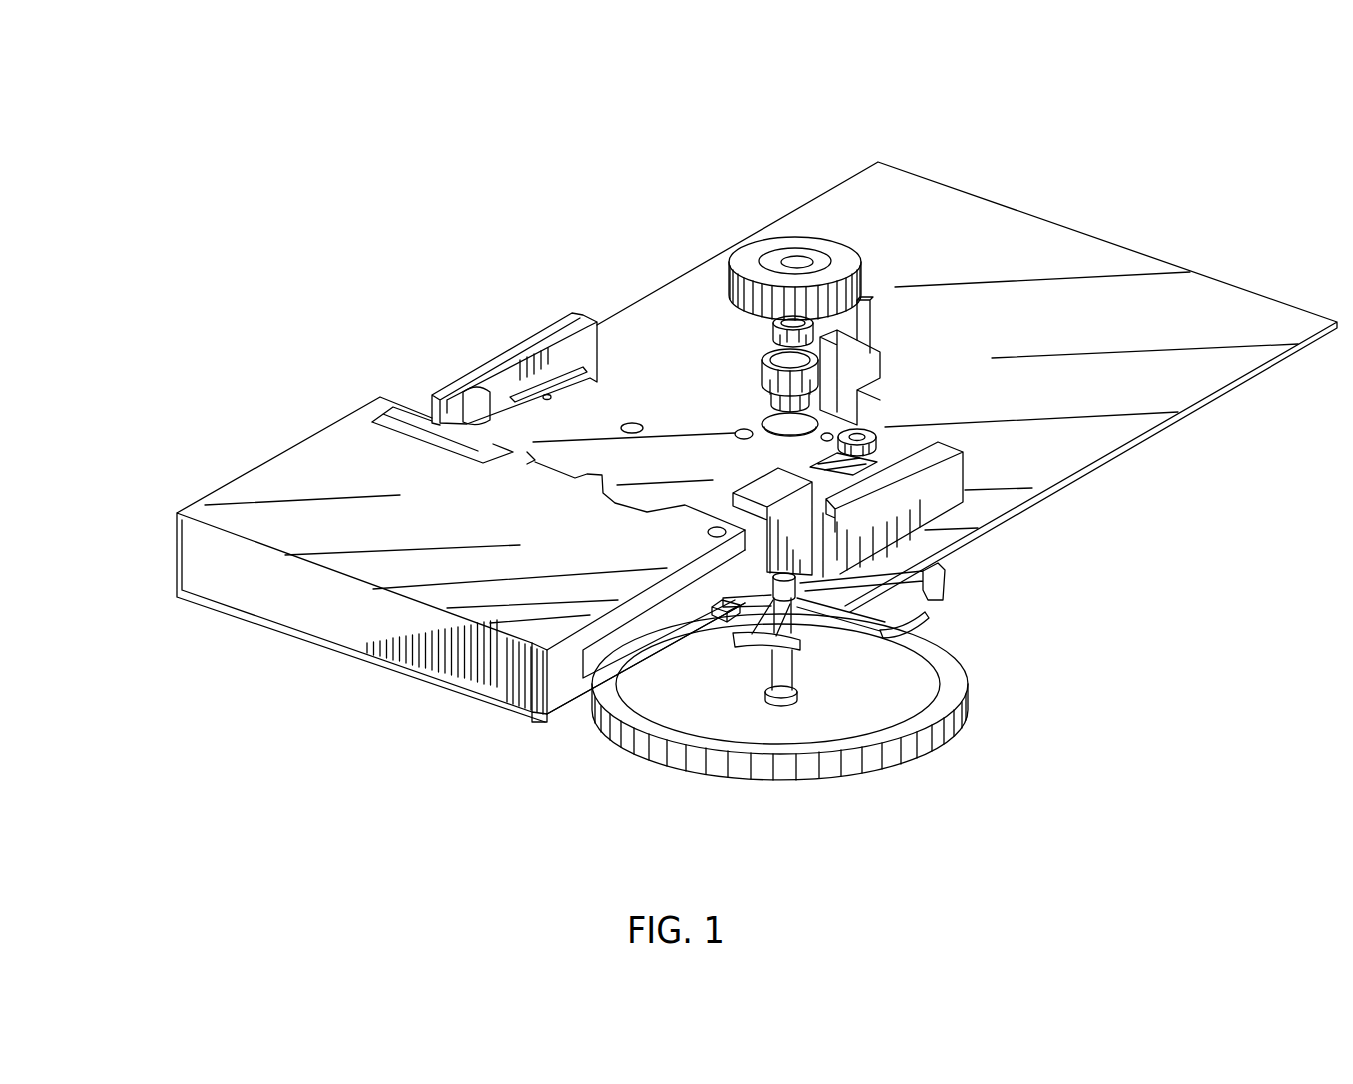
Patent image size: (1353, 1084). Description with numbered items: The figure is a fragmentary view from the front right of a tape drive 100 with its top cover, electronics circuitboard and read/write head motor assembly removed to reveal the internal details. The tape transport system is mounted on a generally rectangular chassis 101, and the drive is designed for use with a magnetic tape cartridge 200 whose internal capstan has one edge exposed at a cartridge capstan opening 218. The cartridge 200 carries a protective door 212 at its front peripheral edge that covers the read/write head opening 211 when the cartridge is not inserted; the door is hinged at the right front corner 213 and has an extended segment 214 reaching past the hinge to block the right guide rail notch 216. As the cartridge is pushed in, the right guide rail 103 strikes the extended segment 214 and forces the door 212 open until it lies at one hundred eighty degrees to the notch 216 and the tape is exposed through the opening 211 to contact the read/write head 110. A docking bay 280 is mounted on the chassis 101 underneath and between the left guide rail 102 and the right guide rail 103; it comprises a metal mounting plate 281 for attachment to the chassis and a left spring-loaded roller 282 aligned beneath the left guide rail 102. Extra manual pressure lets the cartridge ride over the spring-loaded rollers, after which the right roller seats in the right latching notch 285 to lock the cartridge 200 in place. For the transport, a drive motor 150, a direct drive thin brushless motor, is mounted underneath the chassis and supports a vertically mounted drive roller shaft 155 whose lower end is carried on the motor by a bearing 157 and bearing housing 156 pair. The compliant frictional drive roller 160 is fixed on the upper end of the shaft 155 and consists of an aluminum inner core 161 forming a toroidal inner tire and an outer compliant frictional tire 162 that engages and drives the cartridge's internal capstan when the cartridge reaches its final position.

The tape drive 100 is at (918, 147).
The chassis 101 is at (1015, 232).
The left guide rail 102 is at (520, 350).
The right guide rail 103 is at (963, 452).
The read/write head 110 is at (885, 370).
The drive motor 150 is at (933, 648).
The drive roller shaft 155 is at (765, 690).
The bearing housing 156 is at (765, 400).
The bearing 157 is at (763, 373).
The compliant frictional drive roller 160 is at (822, 235).
The inner core 161 is at (773, 253).
The outer compliant frictional tire 162 is at (767, 335).
The magnetic tape cartridge 200 is at (265, 455).
The read/write head opening 211 is at (600, 518).
The protective door 212 is at (752, 485).
The right front corner 213 is at (707, 532).
The extended segment 214 is at (668, 612).
The right guide rail notch 216 is at (583, 657).
The cartridge capstan opening 218 is at (573, 480).
The docking bay 280 is at (660, 415).
The metal mounting plate 281 is at (800, 592).
The left spring-loaded roller 282 is at (498, 385).
The right latching notch 285 is at (738, 587).